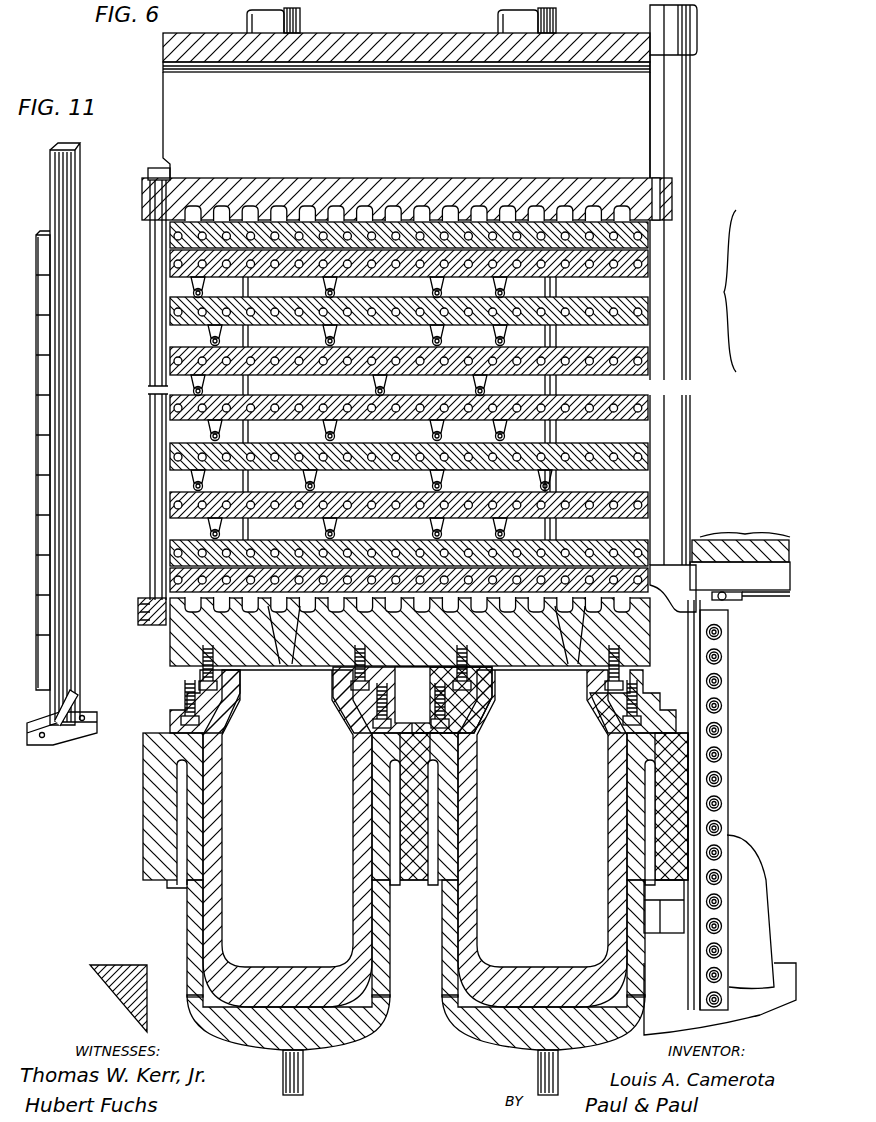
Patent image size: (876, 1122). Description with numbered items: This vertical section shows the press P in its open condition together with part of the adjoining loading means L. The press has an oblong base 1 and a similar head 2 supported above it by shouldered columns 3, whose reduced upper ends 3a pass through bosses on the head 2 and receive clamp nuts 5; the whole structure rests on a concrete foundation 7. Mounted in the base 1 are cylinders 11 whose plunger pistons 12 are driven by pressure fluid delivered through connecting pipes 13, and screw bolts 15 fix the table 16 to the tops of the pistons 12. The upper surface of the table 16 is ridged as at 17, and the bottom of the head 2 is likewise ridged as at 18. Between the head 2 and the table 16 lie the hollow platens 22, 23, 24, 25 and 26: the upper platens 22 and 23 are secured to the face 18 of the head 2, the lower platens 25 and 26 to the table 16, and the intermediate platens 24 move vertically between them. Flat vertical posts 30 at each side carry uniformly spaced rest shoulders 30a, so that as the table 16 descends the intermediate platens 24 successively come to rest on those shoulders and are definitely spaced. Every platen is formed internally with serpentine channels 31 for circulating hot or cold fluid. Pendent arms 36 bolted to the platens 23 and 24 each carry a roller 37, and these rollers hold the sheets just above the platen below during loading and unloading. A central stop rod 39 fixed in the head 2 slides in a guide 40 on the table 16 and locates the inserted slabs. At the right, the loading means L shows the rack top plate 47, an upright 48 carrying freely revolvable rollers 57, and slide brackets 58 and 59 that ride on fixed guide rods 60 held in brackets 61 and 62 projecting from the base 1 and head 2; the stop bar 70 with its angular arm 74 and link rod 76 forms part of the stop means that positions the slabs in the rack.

In FIG. 6, the base 1 is at (150, 821).
In FIG. 6, the head 2 is at (164, 46).
In FIG. 6, the shouldered columns 3 is at (403, 384).
In FIG. 6, the upper ends of columns 3a is at (252, 8).
In FIG. 6, the clamp nuts 5 is at (292, 33).
In FIG. 6, the concrete foundation 7 is at (106, 965).
In FIG. 6, the cylinders 11 is at (343, 1030).
In FIG. 6, the plunger pistons 12 is at (212, 912).
In FIG. 6, the connecting pipes 13 is at (302, 1077).
In FIG. 6, the screw bolts 15 is at (205, 674).
In FIG. 6, the table 16 is at (175, 644).
In FIG. 6, the ridged upper surface 17 is at (300, 612).
In FIG. 6, the ridged bottom surface of head 18 is at (462, 218).
In FIG. 6, the upper platen 22 is at (650, 232).
In FIG. 6, the upper platen 23 is at (650, 263).
In FIG. 6, the intermediate platens 24 is at (650, 352).
In FIG. 6, the lower platen 25 is at (650, 540).
In FIG. 6, the lower platen 26 is at (650, 566).
In FIG. 11, the flat vertical posts 30 is at (63, 425).
In FIG. 6, the flat vertical posts 30 is at (238, 292).
In FIG. 11, the rest shoulders 30a is at (48, 255).
In FIG. 6, the serpentine channels 31 is at (290, 216).
In FIG. 6, the pendent arms 36 is at (398, 294).
In FIG. 6, the rollers 37 is at (500, 340).
In FIG. 6, the stop rod 39 is at (165, 398).
In FIG. 6, the guide 40 is at (145, 600).
In FIG. 6, the top plate 47 is at (740, 565).
In FIG. 6, the uprights 48 is at (730, 755).
In FIG. 6, the rollers 57 is at (720, 737).
In FIG. 6, the slide bracket 58 is at (760, 938).
In FIG. 6, the slide bracket 59 is at (692, 612).
In FIG. 6, the guide rods 60 is at (680, 170).
In FIG. 6, the bracket 61 is at (675, 912).
In FIG. 6, the bracket 62 is at (696, 27).
In FIG. 6, the stop bar 70 is at (690, 791).
In FIG. 6, the angular arm 74 is at (722, 608).
In FIG. 6, the link rod 76 is at (786, 598).
In FIG. 6, the press P is at (737, 291).
In FIG. 6, the loading means L is at (745, 523).